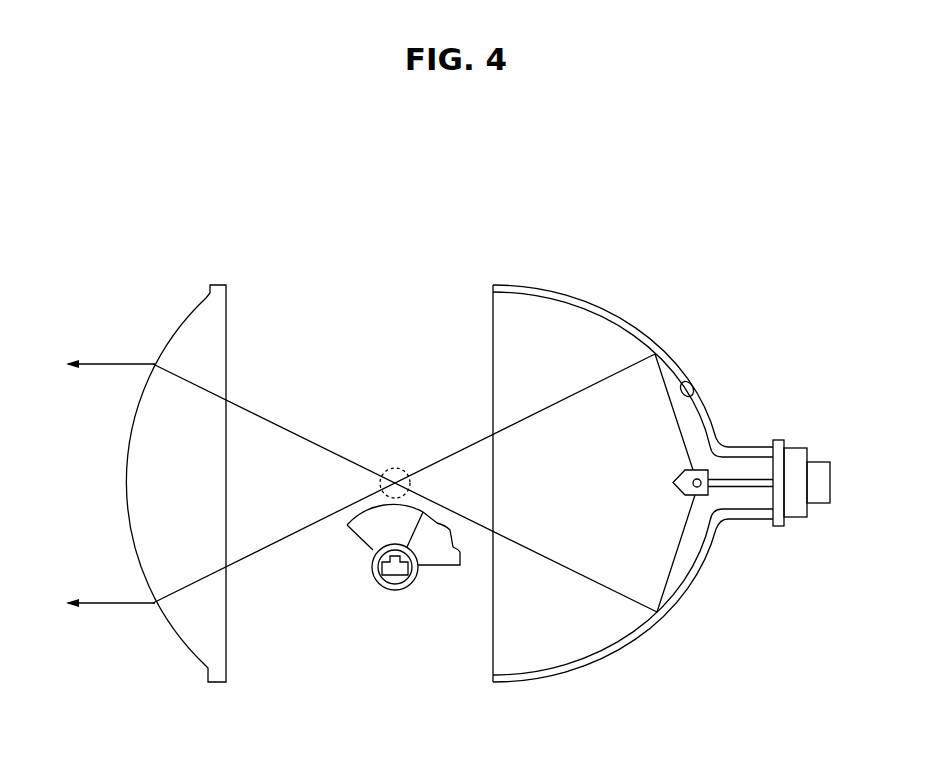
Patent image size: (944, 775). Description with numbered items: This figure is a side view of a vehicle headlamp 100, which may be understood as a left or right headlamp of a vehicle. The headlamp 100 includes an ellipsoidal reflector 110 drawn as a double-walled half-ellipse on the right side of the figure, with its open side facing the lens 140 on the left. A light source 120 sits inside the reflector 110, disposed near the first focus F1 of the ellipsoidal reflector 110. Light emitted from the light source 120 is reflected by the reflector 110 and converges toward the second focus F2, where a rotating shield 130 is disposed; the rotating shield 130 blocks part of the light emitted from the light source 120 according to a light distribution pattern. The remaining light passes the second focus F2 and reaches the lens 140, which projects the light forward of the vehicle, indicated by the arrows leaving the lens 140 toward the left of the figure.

The headlamp 100 is at (601, 256).
The ellipsoidal reflector 110 is at (702, 390).
The light source 120 is at (698, 468).
The rotating shield 130 is at (394, 592).
The lens 140 is at (123, 505).
The first focus F1 is at (698, 490).
The second focus F2 is at (393, 468).